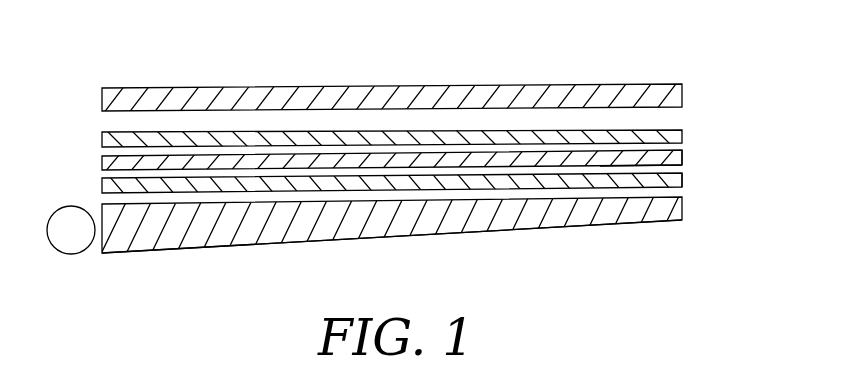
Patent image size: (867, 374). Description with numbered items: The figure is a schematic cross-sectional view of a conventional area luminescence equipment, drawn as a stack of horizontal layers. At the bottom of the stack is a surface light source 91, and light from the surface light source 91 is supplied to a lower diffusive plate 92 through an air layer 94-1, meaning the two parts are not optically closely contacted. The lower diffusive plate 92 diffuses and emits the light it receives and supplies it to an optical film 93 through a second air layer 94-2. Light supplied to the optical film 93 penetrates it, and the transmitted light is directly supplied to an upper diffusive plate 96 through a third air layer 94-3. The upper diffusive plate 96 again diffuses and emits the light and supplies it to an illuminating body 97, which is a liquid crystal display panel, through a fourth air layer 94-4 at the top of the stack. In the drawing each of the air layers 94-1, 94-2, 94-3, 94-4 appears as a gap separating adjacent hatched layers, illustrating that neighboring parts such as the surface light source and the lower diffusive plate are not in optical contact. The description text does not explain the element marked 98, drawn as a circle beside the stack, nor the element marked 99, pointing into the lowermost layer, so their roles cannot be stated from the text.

The surface light source 91 is at (449, 158).
The lower diffusive plate 92 is at (683, 181).
The optical film 93 is at (683, 161).
The air layer 94-1 is at (669, 192).
The air layer 94-2 is at (683, 166).
The air layer 94-3 is at (627, 148).
The air layer 94-4 is at (450, 122).
The upper diffusive plate 96 is at (543, 135).
The illuminating body 97 is at (380, 100).
The roller 98 is at (71, 240).
The substrate 99 is at (277, 230).